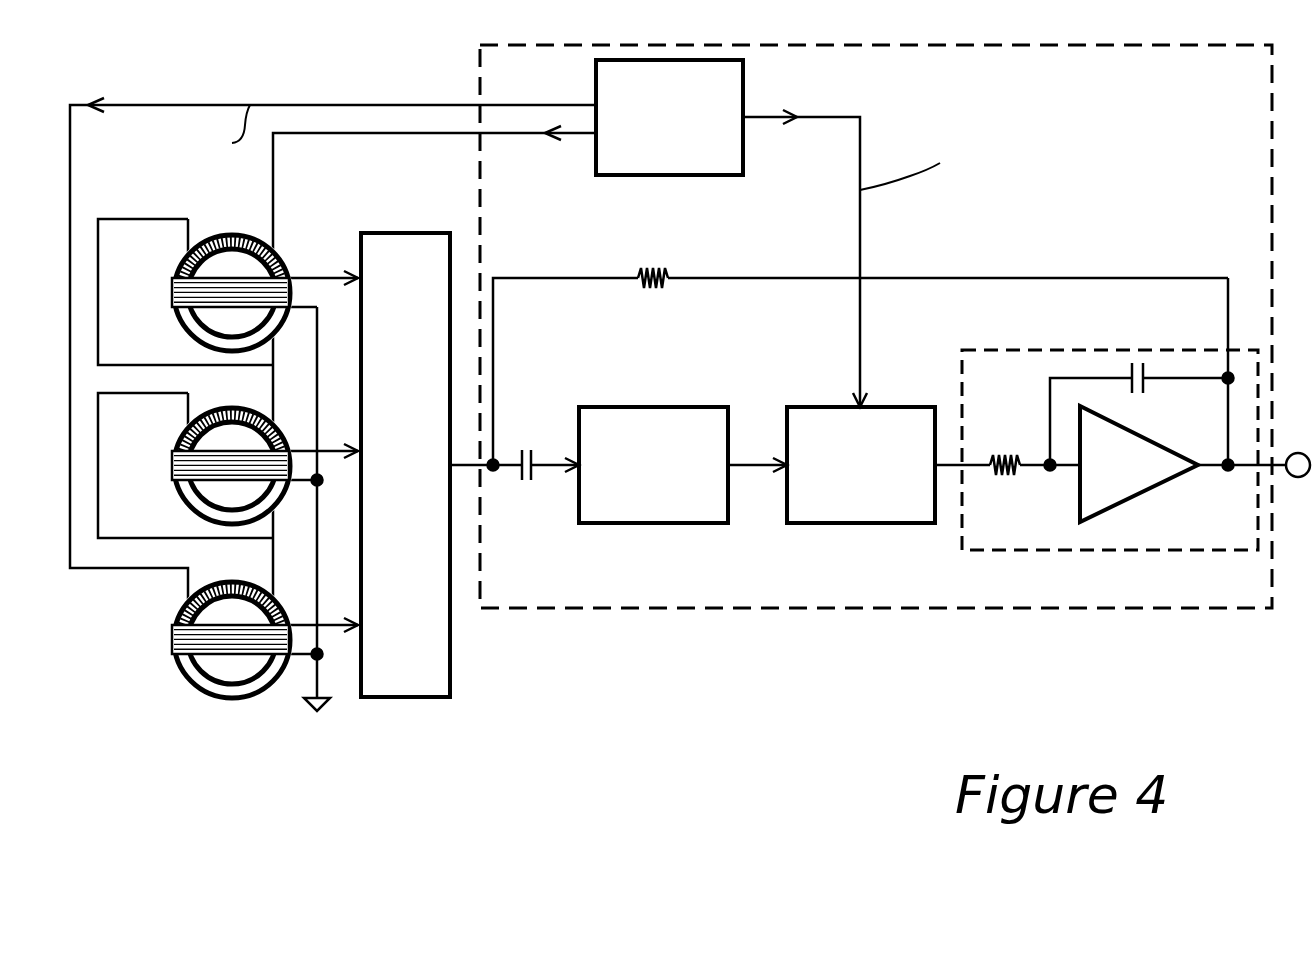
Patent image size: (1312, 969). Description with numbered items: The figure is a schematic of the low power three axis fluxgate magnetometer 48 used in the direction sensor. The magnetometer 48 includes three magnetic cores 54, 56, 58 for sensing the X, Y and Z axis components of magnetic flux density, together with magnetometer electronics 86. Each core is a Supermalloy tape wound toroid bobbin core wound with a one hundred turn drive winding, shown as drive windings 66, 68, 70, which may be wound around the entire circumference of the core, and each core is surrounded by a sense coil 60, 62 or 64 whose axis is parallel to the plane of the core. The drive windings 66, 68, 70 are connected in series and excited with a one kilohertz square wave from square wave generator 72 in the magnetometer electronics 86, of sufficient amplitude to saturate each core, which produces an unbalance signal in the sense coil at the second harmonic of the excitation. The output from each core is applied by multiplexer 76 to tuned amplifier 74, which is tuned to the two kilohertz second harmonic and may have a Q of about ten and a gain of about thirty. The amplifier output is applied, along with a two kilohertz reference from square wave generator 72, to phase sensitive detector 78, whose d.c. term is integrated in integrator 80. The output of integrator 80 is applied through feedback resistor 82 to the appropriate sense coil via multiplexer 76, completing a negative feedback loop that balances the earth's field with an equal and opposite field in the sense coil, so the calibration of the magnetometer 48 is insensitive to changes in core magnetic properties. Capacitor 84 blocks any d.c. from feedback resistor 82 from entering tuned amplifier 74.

The 3 axis fluxgate magnetometer 48 is at (562, 702).
The magnetic core 54 is at (310, 253).
The magnetic core 56 is at (190, 512).
The magnetic core 58 is at (185, 683).
The sense coil 60 is at (172, 298).
The sense coil 62 is at (172, 465).
The sense coil 64 is at (172, 638).
The drive winding 66 is at (254, 233).
The drive winding 68 is at (246, 408).
The drive winding 70 is at (260, 586).
The square wave generator 72 is at (698, 124).
The tuned amplifier 74 is at (646, 406).
The multiplexer 76 is at (398, 233).
The phase sensitive detector 78 is at (881, 406).
The integrator 80 is at (1040, 551).
The feedback resistor 82 is at (655, 291).
The capacitor 84 is at (528, 463).
The magnetometer electronics 86 is at (857, 326).